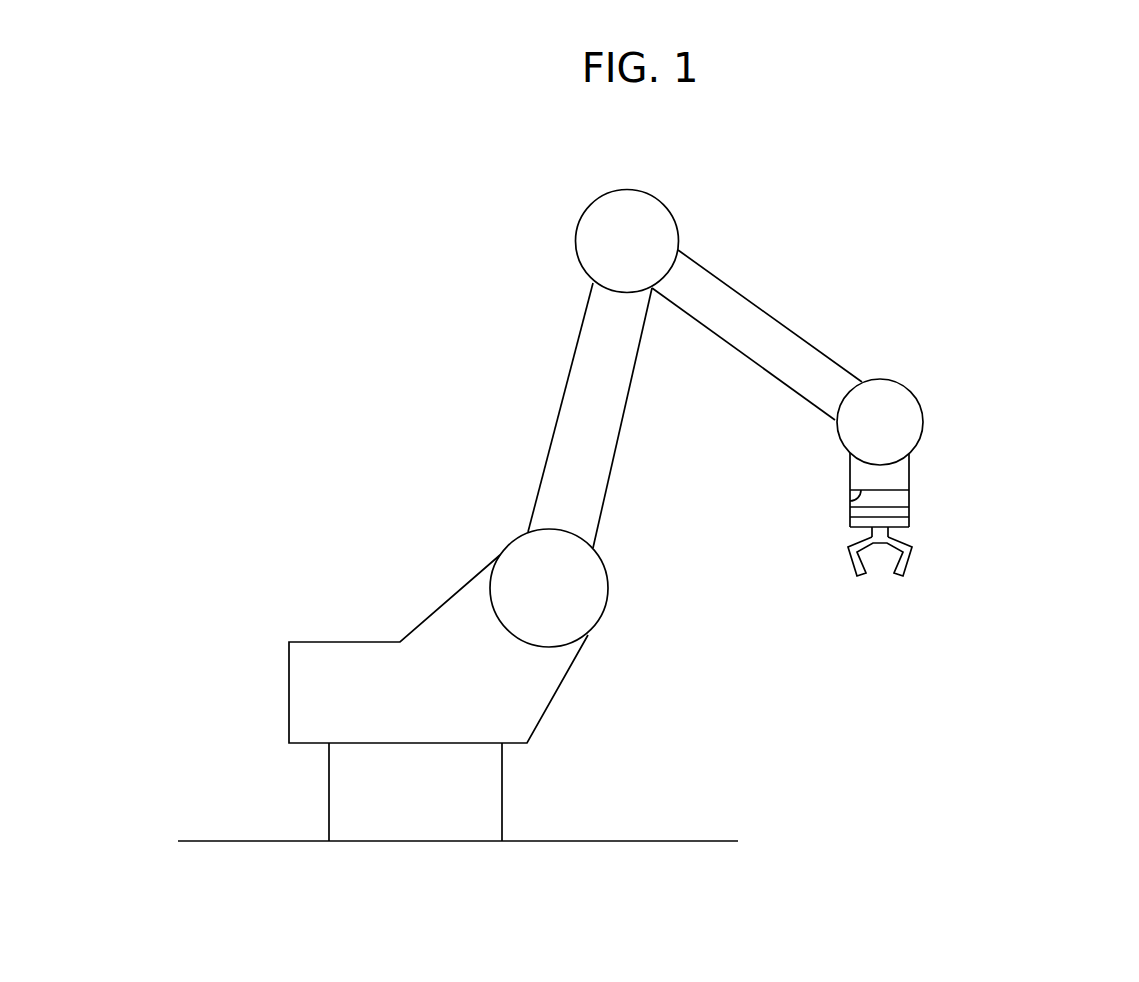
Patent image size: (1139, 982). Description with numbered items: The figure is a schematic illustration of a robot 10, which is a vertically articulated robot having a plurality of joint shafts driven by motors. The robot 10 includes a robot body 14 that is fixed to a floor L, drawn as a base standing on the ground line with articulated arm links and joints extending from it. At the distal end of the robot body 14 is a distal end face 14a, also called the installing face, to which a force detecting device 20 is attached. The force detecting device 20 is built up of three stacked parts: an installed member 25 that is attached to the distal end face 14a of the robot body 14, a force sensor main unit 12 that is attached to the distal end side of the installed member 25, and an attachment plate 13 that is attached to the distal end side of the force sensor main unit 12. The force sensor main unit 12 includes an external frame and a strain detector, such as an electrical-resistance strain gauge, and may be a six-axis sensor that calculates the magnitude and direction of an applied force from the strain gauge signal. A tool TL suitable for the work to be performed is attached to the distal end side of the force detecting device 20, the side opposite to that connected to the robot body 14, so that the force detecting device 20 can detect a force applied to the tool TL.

The robot 10 is at (478, 196).
The robot body 14 is at (456, 494).
The distal end face 14a is at (850, 497).
The force detecting device 20 is at (1063, 450).
The installed member 25 is at (909, 498).
The force sensor main unit 12 is at (909, 512).
The attachment plate 13 is at (909, 522).
The tool TL is at (906, 570).
The floor L is at (220, 840).